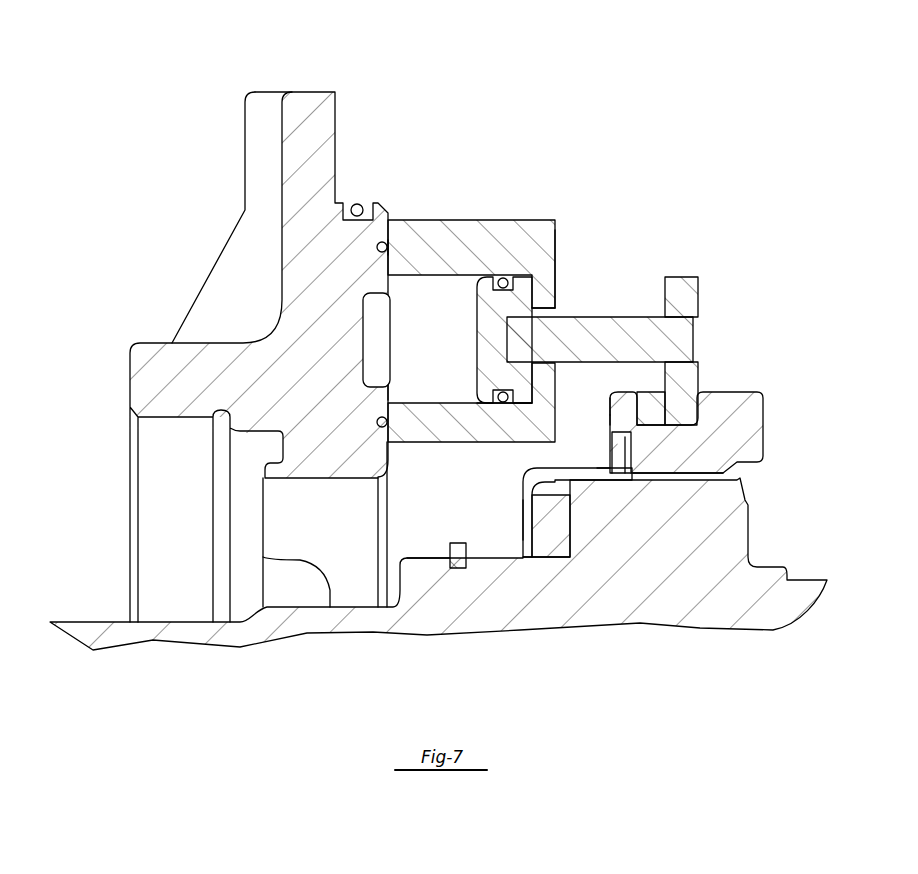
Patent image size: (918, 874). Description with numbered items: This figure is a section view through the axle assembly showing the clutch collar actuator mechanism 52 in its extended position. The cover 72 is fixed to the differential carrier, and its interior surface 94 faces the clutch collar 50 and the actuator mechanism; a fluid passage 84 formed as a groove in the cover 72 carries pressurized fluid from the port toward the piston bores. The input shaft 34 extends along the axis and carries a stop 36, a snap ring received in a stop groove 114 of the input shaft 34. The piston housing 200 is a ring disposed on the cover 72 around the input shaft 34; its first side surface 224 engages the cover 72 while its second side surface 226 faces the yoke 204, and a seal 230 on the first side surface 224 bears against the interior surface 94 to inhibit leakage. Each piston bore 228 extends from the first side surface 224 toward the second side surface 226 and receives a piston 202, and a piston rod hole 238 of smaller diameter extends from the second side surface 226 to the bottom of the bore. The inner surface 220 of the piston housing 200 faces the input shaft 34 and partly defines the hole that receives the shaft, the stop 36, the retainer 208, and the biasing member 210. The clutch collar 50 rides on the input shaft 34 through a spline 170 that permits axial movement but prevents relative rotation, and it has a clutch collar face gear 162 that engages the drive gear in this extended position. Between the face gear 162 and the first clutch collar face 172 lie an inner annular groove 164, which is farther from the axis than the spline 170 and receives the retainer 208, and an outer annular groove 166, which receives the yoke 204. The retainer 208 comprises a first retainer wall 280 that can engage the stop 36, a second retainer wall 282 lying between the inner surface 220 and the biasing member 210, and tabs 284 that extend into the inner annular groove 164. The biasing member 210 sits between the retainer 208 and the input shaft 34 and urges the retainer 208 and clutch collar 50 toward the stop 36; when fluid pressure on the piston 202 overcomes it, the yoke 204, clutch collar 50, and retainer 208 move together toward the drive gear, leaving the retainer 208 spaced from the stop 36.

The cover 72 is at (265, 107).
The fluid passage 84 is at (380, 330).
The input shaft 34 is at (438, 570).
The stop 36 is at (453, 543).
The stop groove 114 is at (457, 570).
The clutch collar actuator mechanism 52 is at (501, 318).
The piston housing 200 is at (508, 233).
The second side surface 226 is at (557, 253).
The inner surface 220 is at (500, 442).
The piston 202 is at (552, 340).
The piston rod hole 238 is at (547, 315).
The piston bore 228 is at (457, 403).
The first side surface 224 is at (388, 223).
The seal 230 is at (380, 249).
The interior surface 94 is at (390, 392).
The clutch collar 50 is at (690, 390).
The yoke 204 is at (698, 290).
The clutch collar face gear 162 is at (690, 428).
The first clutch collar face 172 is at (610, 415).
The inner annular groove 164 is at (610, 422).
The tab 284 is at (615, 460).
The outer annular groove 166 is at (650, 412).
The spline 170 is at (690, 480).
The retainer 208 is at (556, 510).
The first retainer wall 280 is at (520, 537).
The second retainer wall 282 is at (597, 463).
The biasing member 210 is at (562, 537).